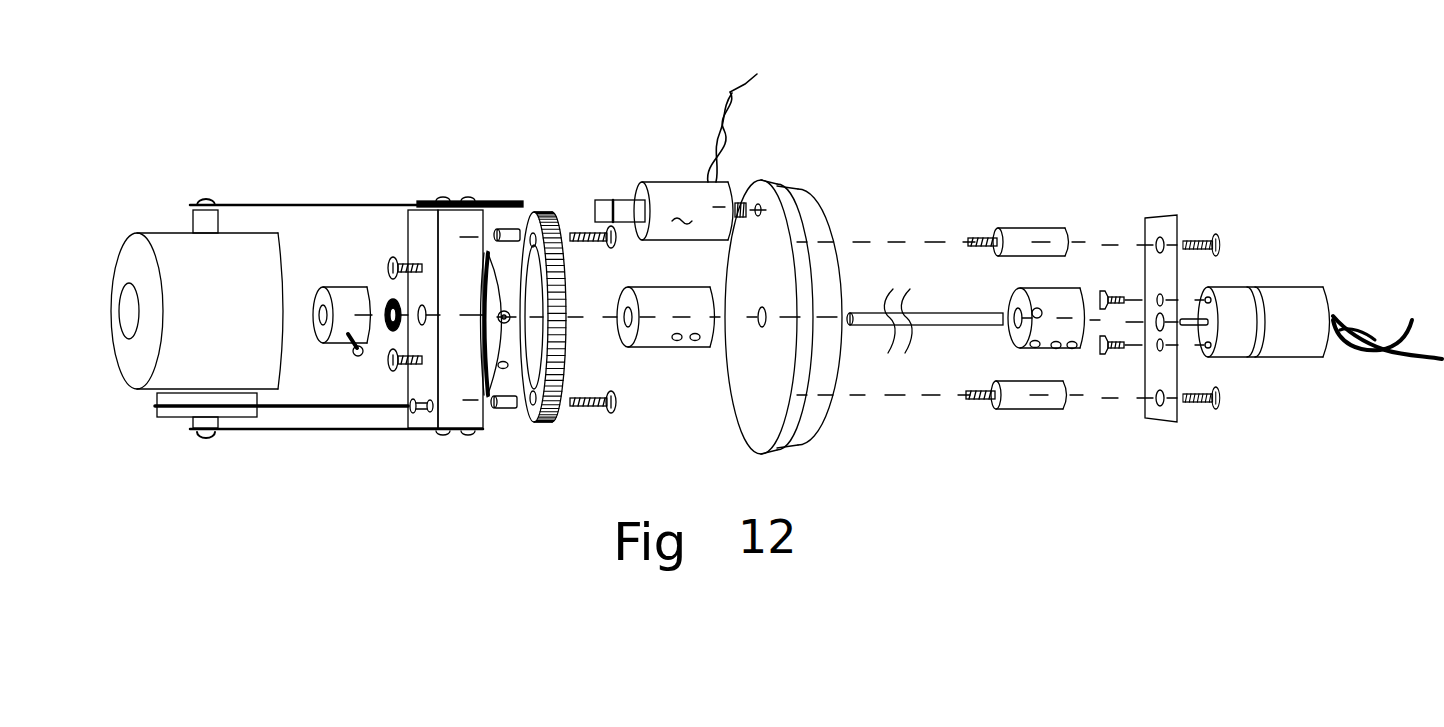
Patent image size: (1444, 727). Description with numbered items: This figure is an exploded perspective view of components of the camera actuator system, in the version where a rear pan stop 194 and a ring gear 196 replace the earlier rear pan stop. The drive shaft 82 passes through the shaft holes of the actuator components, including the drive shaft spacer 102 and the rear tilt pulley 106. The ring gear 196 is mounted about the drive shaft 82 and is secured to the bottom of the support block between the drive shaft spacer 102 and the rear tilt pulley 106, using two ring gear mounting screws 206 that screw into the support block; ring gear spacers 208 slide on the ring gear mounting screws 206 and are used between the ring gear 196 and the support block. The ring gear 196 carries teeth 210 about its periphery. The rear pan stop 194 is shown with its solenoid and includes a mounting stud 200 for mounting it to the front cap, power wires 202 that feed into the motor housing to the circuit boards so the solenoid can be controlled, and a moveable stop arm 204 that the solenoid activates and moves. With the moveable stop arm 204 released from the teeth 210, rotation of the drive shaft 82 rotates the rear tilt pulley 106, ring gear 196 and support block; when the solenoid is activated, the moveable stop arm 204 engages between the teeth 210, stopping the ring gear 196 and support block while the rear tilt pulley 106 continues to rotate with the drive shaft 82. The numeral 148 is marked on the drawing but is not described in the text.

The drive shaft 82 is at (938, 310).
The drive shaft spacer 102 is at (653, 343).
The rear tilt pulley 106 is at (483, 433).
The motor 148 is at (695, 206).
The rear pan stop 194 is at (700, 149).
The ring gear 196 is at (538, 320).
The mounting stud 200 is at (743, 198).
The power wires 202 is at (769, 110).
The moveable stop arm 204 is at (603, 197).
The ring gear mounting screws 206 is at (590, 245).
The ring gear spacers 208 is at (505, 229).
The teeth 210 is at (541, 421).